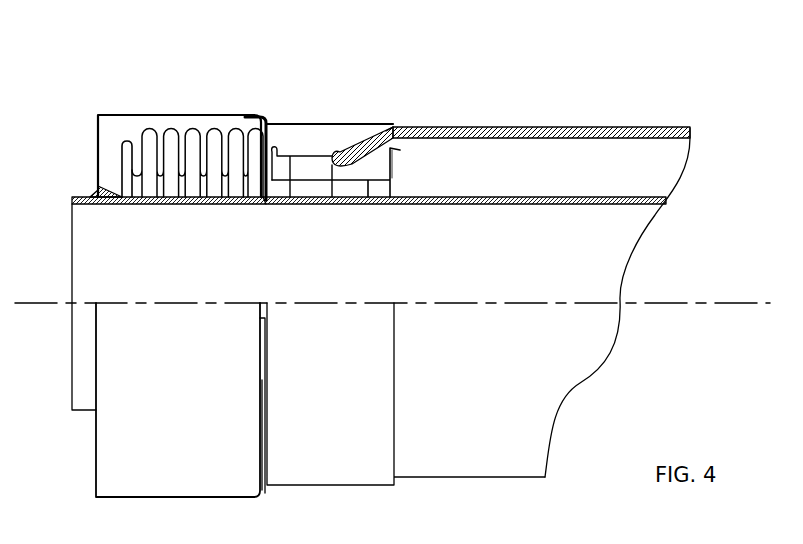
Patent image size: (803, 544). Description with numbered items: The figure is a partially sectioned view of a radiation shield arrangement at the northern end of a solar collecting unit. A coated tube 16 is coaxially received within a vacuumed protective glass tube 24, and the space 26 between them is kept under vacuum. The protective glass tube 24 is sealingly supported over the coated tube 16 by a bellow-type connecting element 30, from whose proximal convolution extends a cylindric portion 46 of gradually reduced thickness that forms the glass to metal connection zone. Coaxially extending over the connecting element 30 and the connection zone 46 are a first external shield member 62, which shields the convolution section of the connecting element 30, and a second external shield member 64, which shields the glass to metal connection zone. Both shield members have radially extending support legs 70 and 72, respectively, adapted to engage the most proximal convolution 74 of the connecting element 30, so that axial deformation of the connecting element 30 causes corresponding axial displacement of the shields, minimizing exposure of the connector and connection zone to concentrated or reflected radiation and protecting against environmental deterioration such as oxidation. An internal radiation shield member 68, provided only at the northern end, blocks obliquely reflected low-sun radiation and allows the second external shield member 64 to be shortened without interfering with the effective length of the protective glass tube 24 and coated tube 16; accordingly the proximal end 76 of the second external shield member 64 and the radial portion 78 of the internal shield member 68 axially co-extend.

The coated tube 16 is at (493, 197).
The protective glass tube 24 is at (607, 127).
The space 26 is at (652, 163).
The connecting element 30 is at (297, 151).
The cylindric portion 46 is at (356, 146).
The first external shield member 62 is at (223, 113).
The second external shield member 64 is at (343, 124).
The internal radiation shield member 68 is at (410, 158).
The support legs 70 is at (262, 140).
The support legs 72 is at (292, 124).
The most proximal convolution 74 is at (266, 206).
The proximal end 76 is at (390, 128).
The radial portion 78 is at (397, 152).